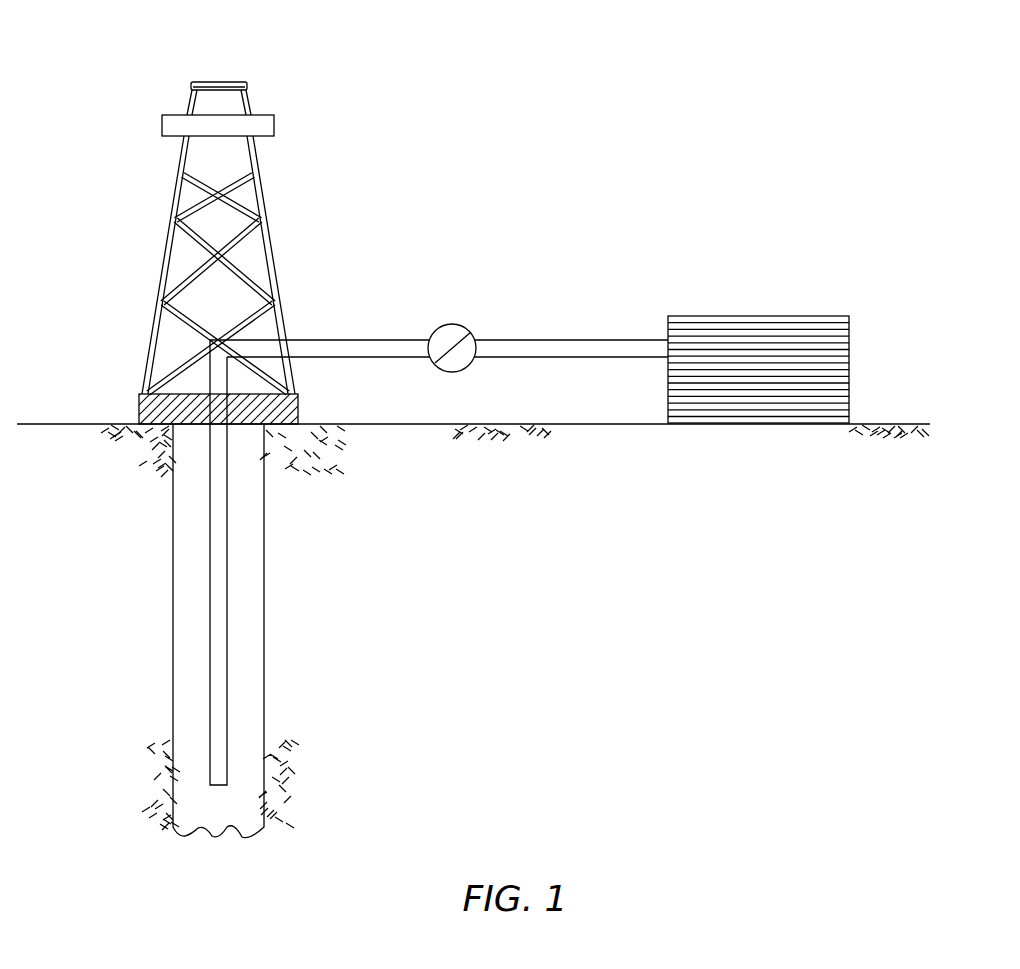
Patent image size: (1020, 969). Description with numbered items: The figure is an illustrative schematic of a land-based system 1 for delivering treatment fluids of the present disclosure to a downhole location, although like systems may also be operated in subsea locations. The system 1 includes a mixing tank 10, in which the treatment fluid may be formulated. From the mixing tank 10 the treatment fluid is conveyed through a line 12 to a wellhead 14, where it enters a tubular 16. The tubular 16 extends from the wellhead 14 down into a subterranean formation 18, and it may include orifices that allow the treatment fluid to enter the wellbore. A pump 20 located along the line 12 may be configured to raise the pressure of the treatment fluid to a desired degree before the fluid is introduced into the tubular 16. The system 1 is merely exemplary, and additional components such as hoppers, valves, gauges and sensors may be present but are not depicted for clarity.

The system 1 is at (92, 82).
The mixing tank 10 is at (835, 316).
The line 12 is at (360, 339).
The wellhead 14 is at (139, 408).
The tubular 16 is at (227, 545).
The subterranean formation 18 is at (90, 643).
The pump 20 is at (468, 330).